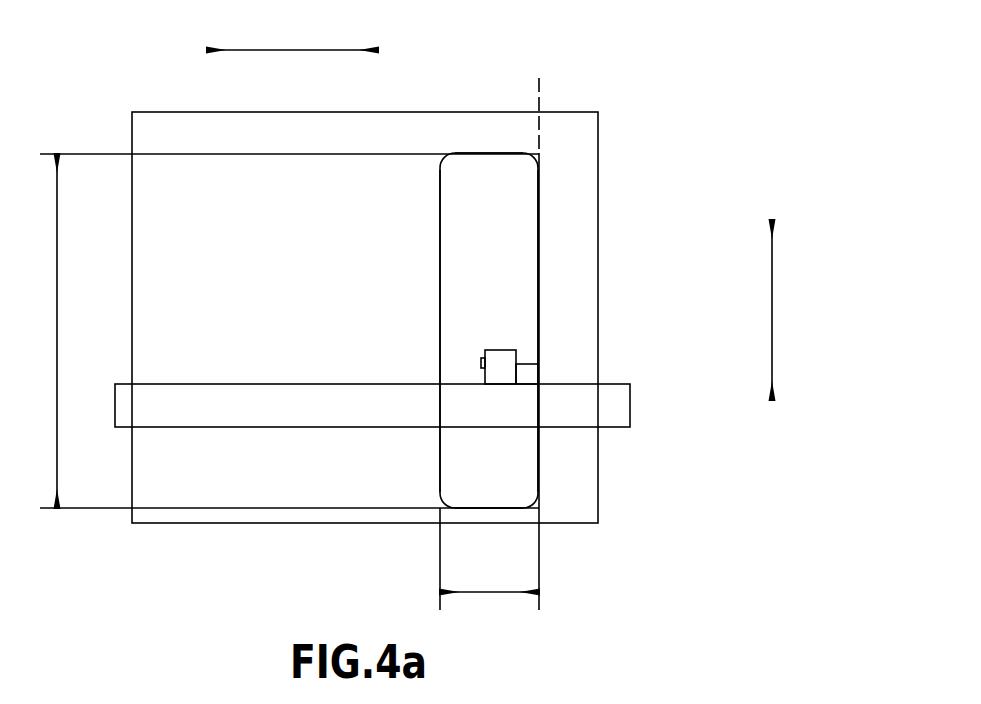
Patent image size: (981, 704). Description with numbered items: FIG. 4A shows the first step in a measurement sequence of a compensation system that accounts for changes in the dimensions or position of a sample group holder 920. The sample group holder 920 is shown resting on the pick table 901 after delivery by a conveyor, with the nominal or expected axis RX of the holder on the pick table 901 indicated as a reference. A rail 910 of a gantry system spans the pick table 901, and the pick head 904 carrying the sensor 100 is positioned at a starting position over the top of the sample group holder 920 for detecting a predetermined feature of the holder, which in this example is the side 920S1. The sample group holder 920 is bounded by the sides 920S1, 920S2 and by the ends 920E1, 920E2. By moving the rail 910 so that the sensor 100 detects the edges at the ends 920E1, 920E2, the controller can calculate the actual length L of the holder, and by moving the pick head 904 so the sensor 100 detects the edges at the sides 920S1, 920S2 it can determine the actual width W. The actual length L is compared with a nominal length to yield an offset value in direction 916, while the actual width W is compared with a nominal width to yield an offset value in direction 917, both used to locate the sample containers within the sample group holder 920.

The pick table 901 is at (160, 112).
The direction 917 is at (287, 50).
The length L is at (57, 328).
The nominal axis RX is at (540, 90).
The sample group holder 920 is at (539, 207).
The side of sample group holder 920S1 is at (440, 263).
The side of sample group holder 920S2 is at (539, 265).
The end of sample group holder 920E1 is at (487, 508).
The end of sample group holder 920E2 is at (489, 152).
The width W is at (488, 590).
The rail 910 is at (630, 403).
The sensor 100 is at (481, 361).
The pick head 904 is at (538, 365).
The direction 916 is at (773, 302).